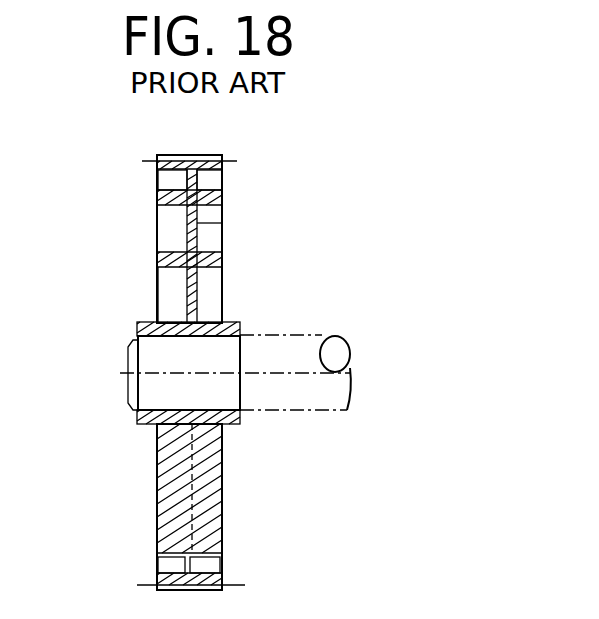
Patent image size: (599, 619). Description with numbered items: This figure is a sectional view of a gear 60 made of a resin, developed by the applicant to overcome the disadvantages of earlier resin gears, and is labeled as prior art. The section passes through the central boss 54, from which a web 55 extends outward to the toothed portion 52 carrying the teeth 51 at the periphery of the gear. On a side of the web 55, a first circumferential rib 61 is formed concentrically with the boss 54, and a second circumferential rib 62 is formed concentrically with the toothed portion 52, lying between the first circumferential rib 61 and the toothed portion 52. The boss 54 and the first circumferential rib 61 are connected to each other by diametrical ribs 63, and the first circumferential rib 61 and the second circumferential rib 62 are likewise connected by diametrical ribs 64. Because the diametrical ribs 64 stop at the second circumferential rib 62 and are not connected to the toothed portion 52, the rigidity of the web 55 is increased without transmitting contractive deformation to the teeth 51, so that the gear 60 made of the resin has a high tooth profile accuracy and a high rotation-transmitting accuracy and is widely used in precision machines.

The teeth 51 is at (183, 155).
The toothed portion 52 is at (144, 181).
The boss 54 is at (148, 425).
The web 55 is at (157, 228).
The gear made of a resin 60 is at (237, 182).
The first circumferential rib 61 is at (157, 281).
The second circumferential rib 62 is at (222, 200).
The diametrical ribs 63 is at (158, 318).
The diametrical ribs 64 is at (157, 208).